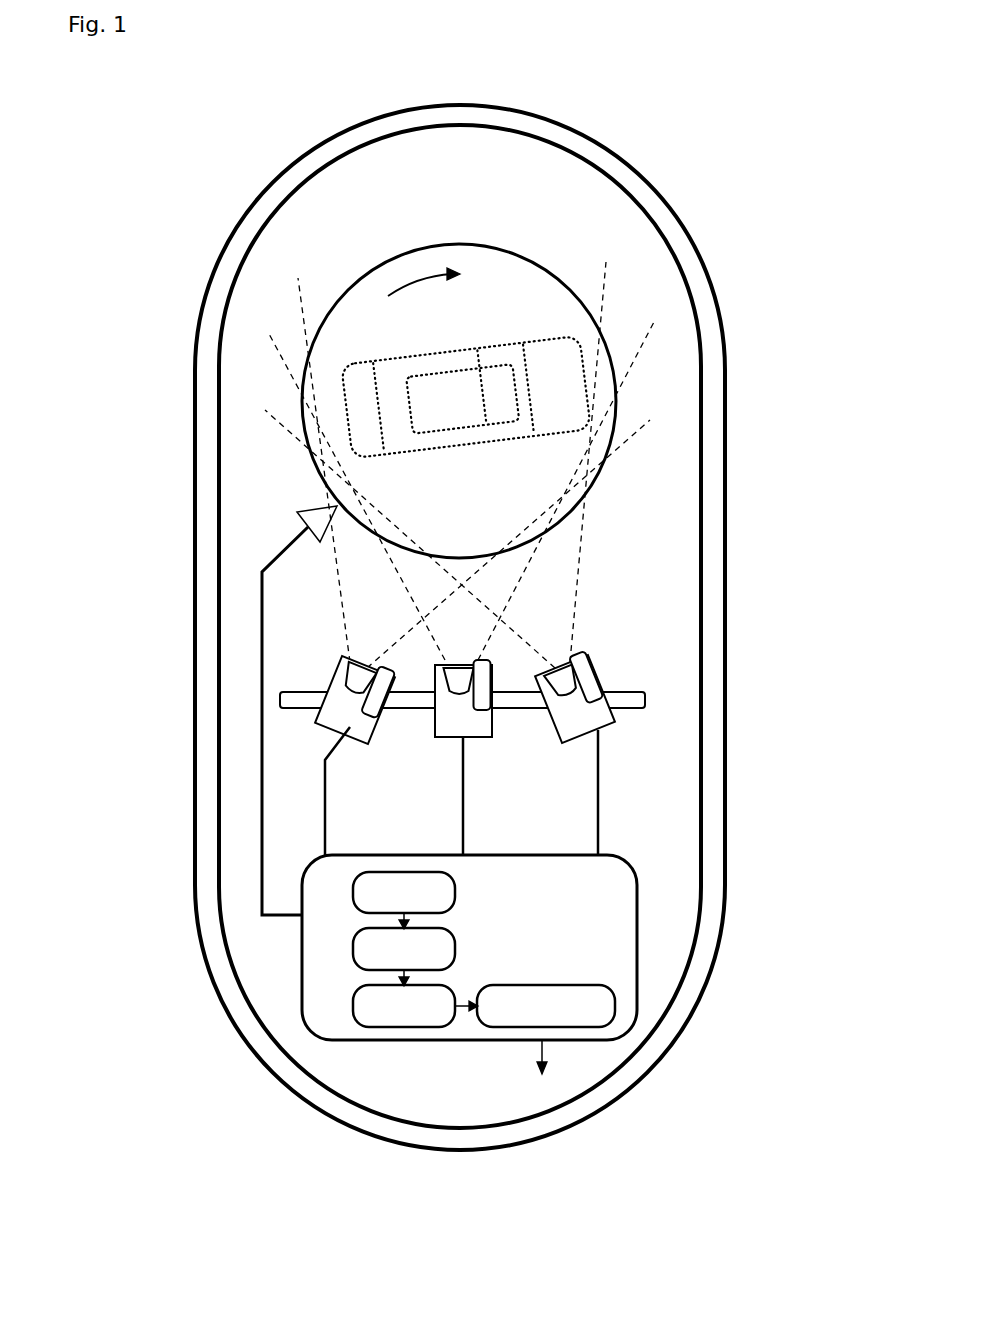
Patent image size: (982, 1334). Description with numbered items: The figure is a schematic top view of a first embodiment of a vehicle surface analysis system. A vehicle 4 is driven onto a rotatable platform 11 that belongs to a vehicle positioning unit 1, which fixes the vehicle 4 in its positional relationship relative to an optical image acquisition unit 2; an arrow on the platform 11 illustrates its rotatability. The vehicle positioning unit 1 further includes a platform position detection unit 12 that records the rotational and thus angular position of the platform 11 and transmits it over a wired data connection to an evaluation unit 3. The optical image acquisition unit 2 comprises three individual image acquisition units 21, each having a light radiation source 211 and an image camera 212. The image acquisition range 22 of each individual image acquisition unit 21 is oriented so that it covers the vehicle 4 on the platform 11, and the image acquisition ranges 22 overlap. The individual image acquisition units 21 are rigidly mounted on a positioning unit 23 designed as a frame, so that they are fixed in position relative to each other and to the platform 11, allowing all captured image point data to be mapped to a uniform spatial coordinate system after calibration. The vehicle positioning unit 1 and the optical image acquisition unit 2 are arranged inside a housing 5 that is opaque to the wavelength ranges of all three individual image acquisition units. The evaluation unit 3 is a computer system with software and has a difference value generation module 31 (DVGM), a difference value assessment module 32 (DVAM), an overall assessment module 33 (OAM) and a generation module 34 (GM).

The vehicle positioning unit 1 is at (550, 234).
The rotatable platform 11 is at (448, 334).
The platform position detection unit 12 is at (333, 507).
The vehicle 4 is at (455, 403).
The housing 5 is at (238, 838).
The optical image acquisition unit 2 is at (473, 737).
The individual image acquisition unit 21 is at (552, 754).
The light radiation source 211 is at (586, 677).
The image camera 212 is at (575, 699).
The image acquisition range 22 is at (395, 617).
The positioning unit 23 is at (628, 697).
The evaluation unit 3 is at (455, 973).
The difference value generation module 31 is at (391, 904).
The difference value assessment module 32 is at (391, 961).
The overall assessment module 33 is at (391, 1018).
The generation module 34 is at (533, 1018).
The difference value generation module DVGM is at (353, 903).
The difference value assessment module DVAM is at (353, 960).
The overall assessment module OAM is at (353, 1017).
The generation module GM is at (613, 1022).